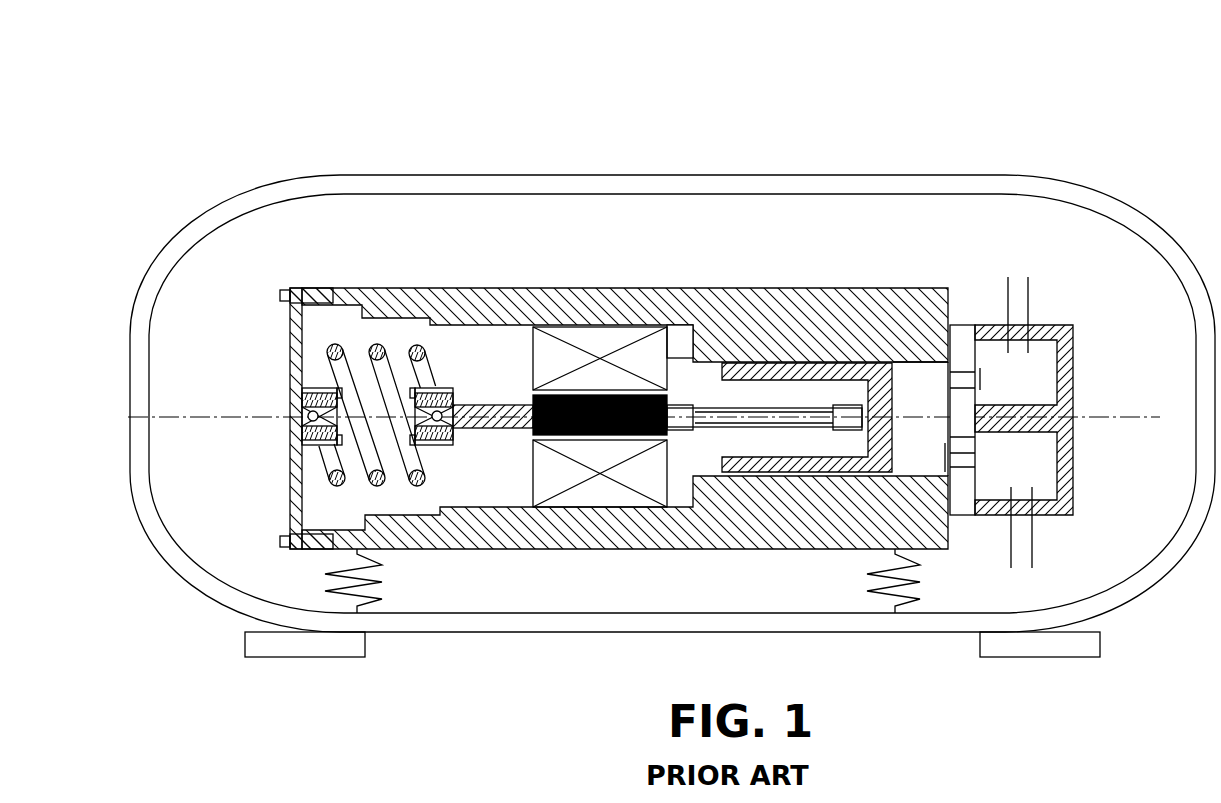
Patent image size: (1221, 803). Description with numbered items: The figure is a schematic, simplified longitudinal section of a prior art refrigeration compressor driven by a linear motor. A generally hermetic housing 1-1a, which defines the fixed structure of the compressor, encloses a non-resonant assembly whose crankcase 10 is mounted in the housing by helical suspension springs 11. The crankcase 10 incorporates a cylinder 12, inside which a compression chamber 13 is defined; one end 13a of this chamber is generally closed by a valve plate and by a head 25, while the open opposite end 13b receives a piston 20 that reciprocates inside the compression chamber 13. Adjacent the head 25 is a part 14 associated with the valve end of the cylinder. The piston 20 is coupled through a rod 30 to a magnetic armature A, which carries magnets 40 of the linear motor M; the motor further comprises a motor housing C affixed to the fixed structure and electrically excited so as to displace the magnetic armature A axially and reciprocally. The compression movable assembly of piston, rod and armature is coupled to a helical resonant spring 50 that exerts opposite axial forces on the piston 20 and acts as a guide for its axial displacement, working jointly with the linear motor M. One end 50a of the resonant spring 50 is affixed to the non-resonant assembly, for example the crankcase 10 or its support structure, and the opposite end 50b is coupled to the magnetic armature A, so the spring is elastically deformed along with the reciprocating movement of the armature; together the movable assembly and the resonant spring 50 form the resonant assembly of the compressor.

The housing 1-1a is at (695, 175).
The crankcase 10 is at (725, 288).
The suspension springs 11 is at (383, 592).
The cylinder 12 is at (903, 363).
The compression chamber 13 is at (922, 443).
The end of compression chamber 13a is at (953, 440).
The open opposite end 13b is at (683, 367).
The valve housing 14 is at (962, 325).
The piston 20 is at (833, 372).
The head 25 is at (1063, 325).
The rod 30 is at (772, 433).
The magnets 40 is at (673, 440).
The helical resonant spring 50 is at (393, 368).
The end of resonant spring 50a is at (313, 409).
The opposite end of resonant spring 50b is at (443, 425).
The magnetic armature A is at (527, 405).
The linear motor M is at (598, 323).
The motor housing C is at (622, 357).